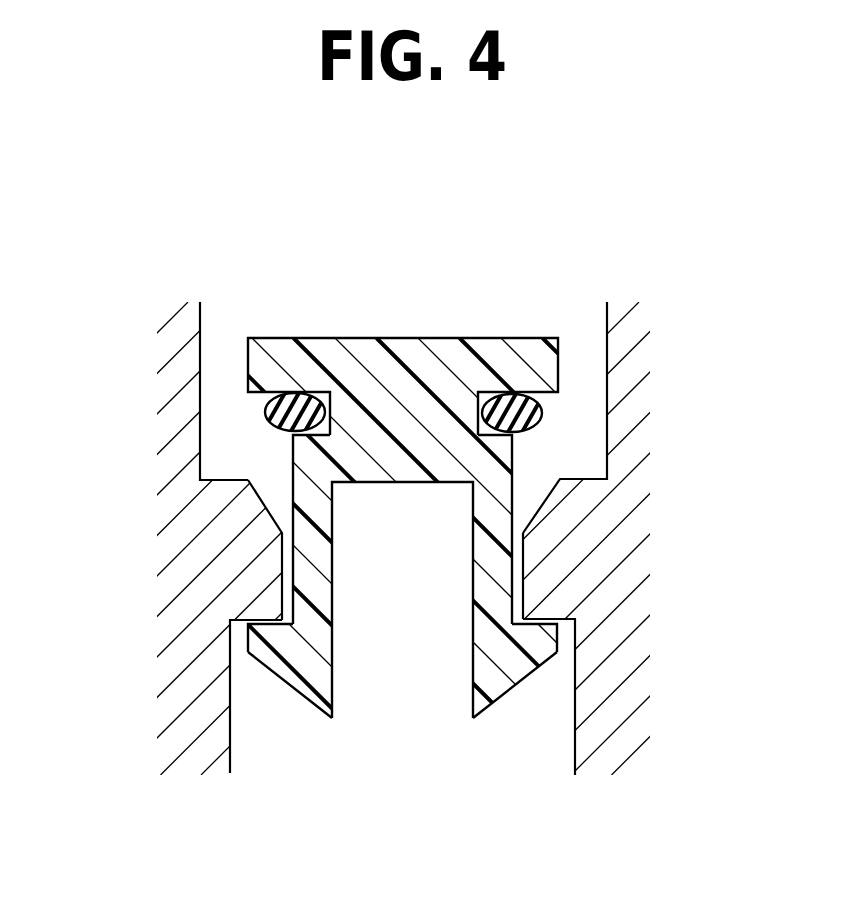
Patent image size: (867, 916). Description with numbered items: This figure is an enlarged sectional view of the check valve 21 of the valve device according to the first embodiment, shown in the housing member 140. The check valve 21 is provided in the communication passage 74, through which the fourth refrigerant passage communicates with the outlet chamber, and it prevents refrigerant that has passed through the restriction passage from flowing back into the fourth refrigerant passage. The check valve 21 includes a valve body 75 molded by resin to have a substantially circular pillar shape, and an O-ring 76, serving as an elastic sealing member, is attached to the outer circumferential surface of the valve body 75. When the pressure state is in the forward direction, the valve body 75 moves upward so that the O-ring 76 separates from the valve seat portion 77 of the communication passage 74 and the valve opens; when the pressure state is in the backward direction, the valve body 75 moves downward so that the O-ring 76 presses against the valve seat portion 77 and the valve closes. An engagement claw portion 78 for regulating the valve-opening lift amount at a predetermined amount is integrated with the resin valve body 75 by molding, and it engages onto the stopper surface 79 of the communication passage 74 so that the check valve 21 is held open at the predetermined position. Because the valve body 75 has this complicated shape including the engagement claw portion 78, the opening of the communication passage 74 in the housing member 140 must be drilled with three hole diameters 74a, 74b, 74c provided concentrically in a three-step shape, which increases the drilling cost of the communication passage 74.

The check valve 21 is at (433, 539).
The communication passage 74 is at (393, 703).
The hole diameter 74a is at (575, 720).
The hole diameter 74b is at (523, 583).
The hole diameter 74c is at (608, 417).
The valve body 75 is at (257, 368).
The O-ring 76 is at (270, 420).
The valve seat portion 77 is at (258, 502).
The stopper surface 79 is at (283, 618).
The engagement claw portion 78 is at (292, 670).
The housing member 140 is at (433, 538).